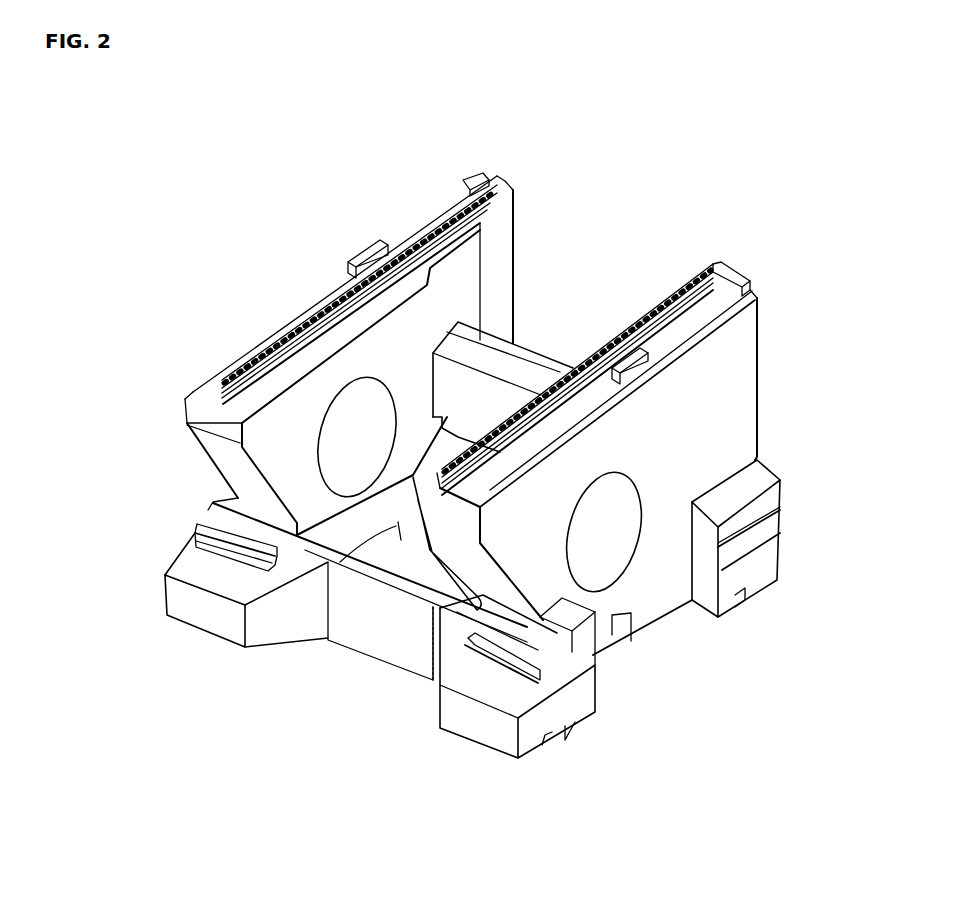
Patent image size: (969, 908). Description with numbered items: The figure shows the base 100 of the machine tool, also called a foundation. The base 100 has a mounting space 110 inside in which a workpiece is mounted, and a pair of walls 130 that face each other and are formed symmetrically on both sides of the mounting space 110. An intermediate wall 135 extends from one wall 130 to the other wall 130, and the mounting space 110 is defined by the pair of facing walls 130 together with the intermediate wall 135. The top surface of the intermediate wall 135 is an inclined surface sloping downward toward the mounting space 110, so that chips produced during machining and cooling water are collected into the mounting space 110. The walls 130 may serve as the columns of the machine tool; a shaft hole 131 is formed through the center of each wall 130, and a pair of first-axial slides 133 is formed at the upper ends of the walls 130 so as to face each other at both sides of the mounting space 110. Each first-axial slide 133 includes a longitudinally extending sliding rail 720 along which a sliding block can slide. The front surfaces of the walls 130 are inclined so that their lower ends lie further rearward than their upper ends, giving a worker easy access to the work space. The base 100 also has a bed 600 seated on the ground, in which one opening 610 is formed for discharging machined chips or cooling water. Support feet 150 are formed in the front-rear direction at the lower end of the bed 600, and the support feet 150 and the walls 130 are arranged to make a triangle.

The base 100 is at (178, 160).
The mounting space 110 is at (337, 625).
The walls 130 is at (435, 478).
The shaft hole 131 is at (357, 422).
The first-axial slides 133 is at (325, 292).
The intermediate wall 135 is at (490, 357).
The support feet 150 is at (207, 577).
The bed 600 is at (347, 603).
The opening 610 is at (433, 578).
The sliding rails 720 is at (417, 245).